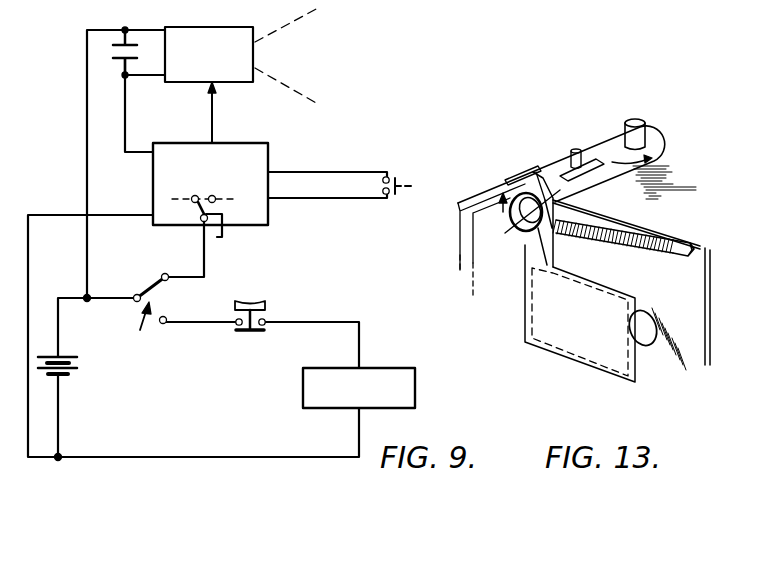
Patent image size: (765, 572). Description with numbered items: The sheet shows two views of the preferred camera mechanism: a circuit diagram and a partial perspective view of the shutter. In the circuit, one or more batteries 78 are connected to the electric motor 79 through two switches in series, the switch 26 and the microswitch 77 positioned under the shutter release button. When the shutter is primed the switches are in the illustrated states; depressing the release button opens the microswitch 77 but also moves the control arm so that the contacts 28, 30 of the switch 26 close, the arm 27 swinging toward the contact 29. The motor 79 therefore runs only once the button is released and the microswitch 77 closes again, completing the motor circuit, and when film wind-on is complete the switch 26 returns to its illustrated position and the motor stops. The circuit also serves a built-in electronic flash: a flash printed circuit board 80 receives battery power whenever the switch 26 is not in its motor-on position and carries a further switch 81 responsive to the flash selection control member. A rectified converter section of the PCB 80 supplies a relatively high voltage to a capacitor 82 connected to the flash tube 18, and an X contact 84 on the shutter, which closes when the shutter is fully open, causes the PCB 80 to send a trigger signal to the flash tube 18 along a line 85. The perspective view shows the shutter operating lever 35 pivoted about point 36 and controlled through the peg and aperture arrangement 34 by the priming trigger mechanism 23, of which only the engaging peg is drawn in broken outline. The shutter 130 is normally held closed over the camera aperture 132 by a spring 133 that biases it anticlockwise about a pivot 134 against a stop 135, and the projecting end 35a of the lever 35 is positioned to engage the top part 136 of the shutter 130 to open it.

In FIG. 9, the capacitor 82 is at (113, 56).
In FIG. 9, the flash tube 18 is at (205, 72).
In FIG. 9, the line 85 is at (214, 118).
In FIG. 9, the flash printed circuit board 80 is at (268, 150).
In FIG. 9, the further switch 81 is at (196, 218).
In FIG. 9, the X contact 84 is at (388, 176).
In FIG. 9, the switch arm 27 is at (142, 293).
In FIG. 9, the switch contact 29 is at (160, 272).
In FIG. 9, the contact 28 is at (131, 305).
In FIG. 9, the switch 26 is at (139, 332).
In FIG. 9, the contact 30 is at (166, 323).
In FIG. 9, the microswitch 77 is at (268, 296).
In FIG. 9, the battery 78 is at (80, 364).
In FIG. 9, the electric motor 79 is at (395, 400).
In FIG. 13, the shutter operating lever 35 is at (640, 172).
In FIG. 13, the projecting end 35a is at (518, 175).
In FIG. 13, the peg and aperture arrangement 34 is at (588, 164).
In FIG. 13, the priming trigger mechanism 23 is at (566, 165).
In FIG. 13, the pivot point 36 is at (636, 122).
In FIG. 13, the top part 136 is at (515, 222).
In FIG. 13, the pivot 134 is at (544, 252).
In FIG. 13, the spring 133 is at (640, 252).
In FIG. 13, the shutter 130 is at (620, 380).
In FIG. 13, the camera aperture 132 is at (557, 353).
In FIG. 13, the stop 135 is at (648, 338).